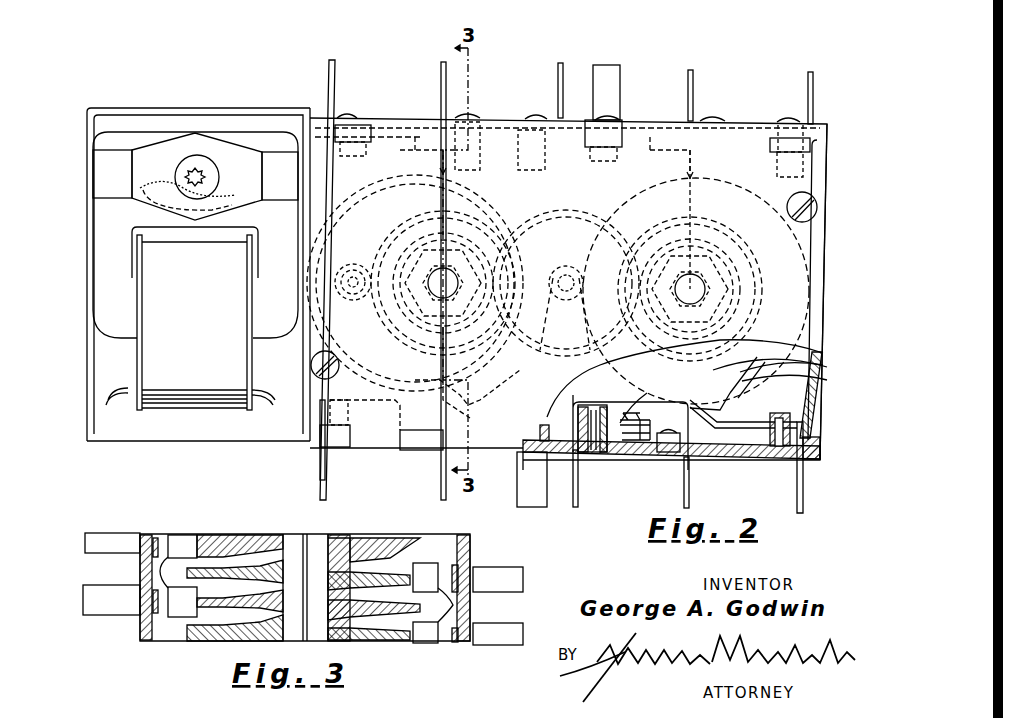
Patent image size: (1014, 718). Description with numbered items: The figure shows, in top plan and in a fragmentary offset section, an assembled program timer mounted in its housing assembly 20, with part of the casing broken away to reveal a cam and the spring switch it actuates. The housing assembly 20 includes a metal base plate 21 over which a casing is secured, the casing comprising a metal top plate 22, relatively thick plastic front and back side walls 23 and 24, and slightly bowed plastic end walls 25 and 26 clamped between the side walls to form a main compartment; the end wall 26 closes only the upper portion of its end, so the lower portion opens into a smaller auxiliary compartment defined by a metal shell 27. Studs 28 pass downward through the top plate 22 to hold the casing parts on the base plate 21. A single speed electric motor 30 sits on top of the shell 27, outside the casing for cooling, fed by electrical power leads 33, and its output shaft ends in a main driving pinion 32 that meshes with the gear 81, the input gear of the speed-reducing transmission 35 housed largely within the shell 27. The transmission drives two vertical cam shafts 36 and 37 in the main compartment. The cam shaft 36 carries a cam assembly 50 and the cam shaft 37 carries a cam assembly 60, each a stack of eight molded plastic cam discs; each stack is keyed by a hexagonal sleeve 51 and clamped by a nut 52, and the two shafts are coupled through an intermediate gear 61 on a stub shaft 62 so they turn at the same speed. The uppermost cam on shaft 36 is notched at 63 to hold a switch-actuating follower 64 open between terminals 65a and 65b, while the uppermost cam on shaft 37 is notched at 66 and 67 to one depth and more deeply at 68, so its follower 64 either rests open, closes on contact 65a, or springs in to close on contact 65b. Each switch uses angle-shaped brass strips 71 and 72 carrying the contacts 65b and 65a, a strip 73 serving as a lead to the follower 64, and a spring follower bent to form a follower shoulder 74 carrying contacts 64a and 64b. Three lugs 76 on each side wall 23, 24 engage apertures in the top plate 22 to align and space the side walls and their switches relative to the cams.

In FIG. 2, the housing assembly 20 is at (652, 117).
In FIG. 3, the housing assembly 20 is at (145, 530).
In FIG. 2, the base plate 21 is at (820, 394).
In FIG. 2, the top plate 22 is at (815, 312).
In FIG. 2, the front side wall 23 is at (740, 458).
In FIG. 3, the front side wall 23 is at (140, 627).
In FIG. 2, the back side wall 24 is at (398, 118).
In FIG. 3, the back side wall 24 is at (470, 548).
In FIG. 2, the end wall 25 is at (817, 418).
In FIG. 2, the end wall 26 is at (313, 150).
In FIG. 2, the metal shell 27 is at (168, 108).
In FIG. 2, the studs 28 is at (790, 218).
In FIG. 2, the electric motor 30 is at (114, 328).
In FIG. 2, the main driving pinion 32 is at (190, 172).
In FIG. 2, the electrical power leads 33 is at (113, 403).
In FIG. 2, the speed-reducing transmission 35 is at (325, 222).
In FIG. 2, the cam shaft 36 is at (450, 273).
In FIG. 2, the cam shaft 37 is at (692, 272).
In FIG. 2, the cam assembly 50 is at (537, 205).
In FIG. 2, the sleeve 51 is at (412, 222).
In FIG. 3, the sleeve 51 is at (293, 538).
In FIG. 2, the nut 52 is at (463, 215).
In FIG. 2, the cam assembly 60 is at (806, 238).
In FIG. 2, the intermediate gear 61 is at (572, 212).
In FIG. 2, the stub shaft 62 is at (558, 280).
In FIG. 2, the notch 63 is at (480, 390).
In FIG. 2, the switch-actuating follower 64 is at (520, 472).
In FIG. 3, the switch-actuating follower 64 is at (140, 568).
In FIG. 2, the contact 64a is at (418, 452).
In FIG. 2, the contact 64b is at (372, 398).
In FIG. 2, the switch contact 65a is at (372, 445).
In FIG. 2, the switch contact 65b is at (430, 400).
In FIG. 2, the notched portion 66 is at (805, 378).
In FIG. 2, the notched portion 67 is at (820, 355).
In FIG. 2, the notch portion 68 is at (818, 372).
In FIG. 2, the strip 71 is at (563, 80).
In FIG. 2, the strip 72 is at (441, 72).
In FIG. 3, the strip 72 is at (92, 540).
In FIG. 2, the strip 73 is at (329, 68).
In FIG. 2, the follower shoulder 74 is at (436, 172).
In FIG. 3, the follower shoulder 74 is at (183, 618).
In FIG. 2, the lugs 76 is at (362, 125).
In FIG. 2, the gear 81 is at (233, 205).